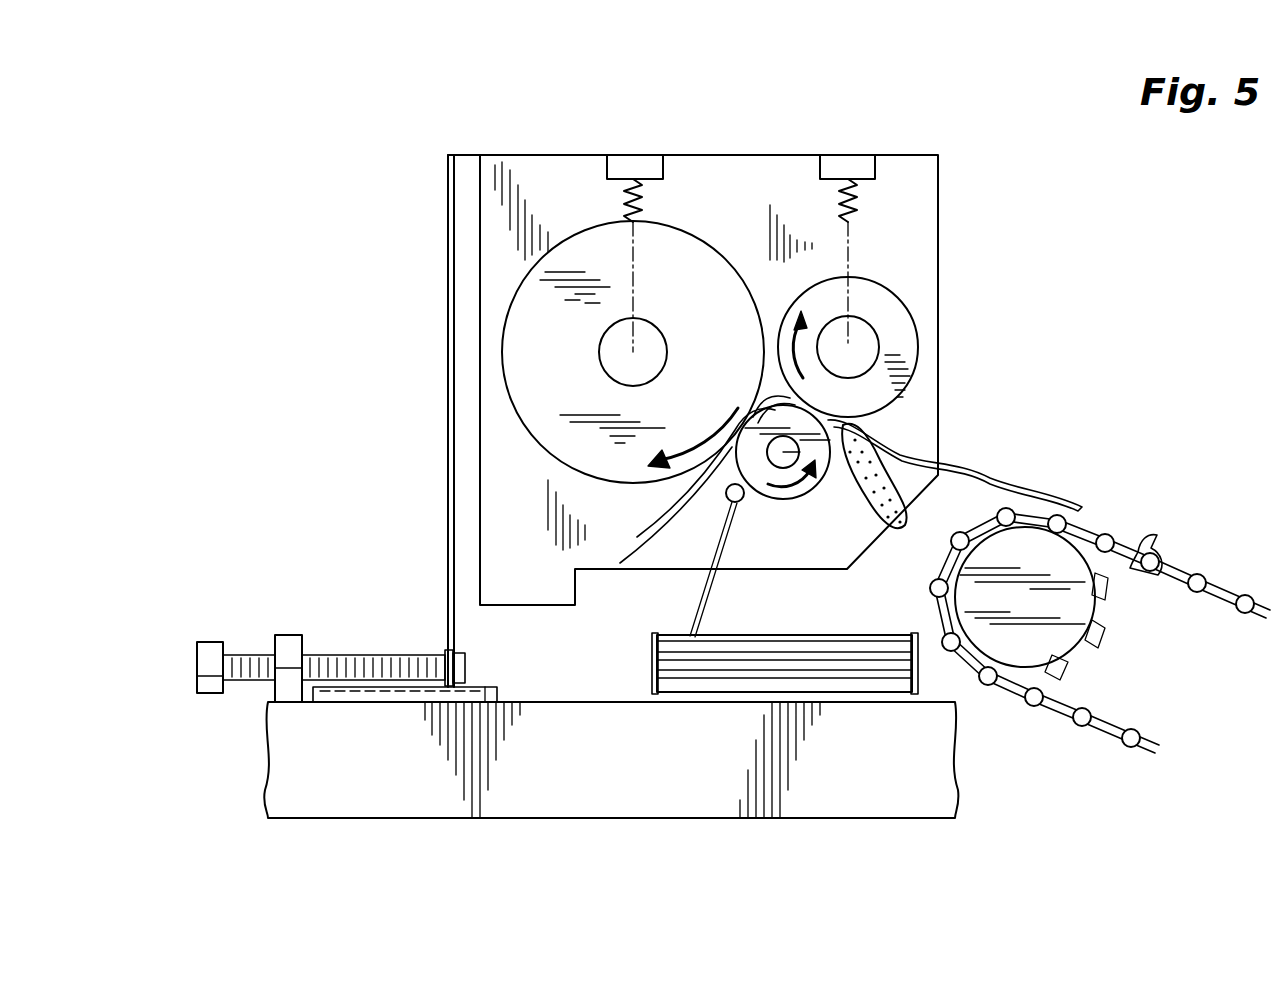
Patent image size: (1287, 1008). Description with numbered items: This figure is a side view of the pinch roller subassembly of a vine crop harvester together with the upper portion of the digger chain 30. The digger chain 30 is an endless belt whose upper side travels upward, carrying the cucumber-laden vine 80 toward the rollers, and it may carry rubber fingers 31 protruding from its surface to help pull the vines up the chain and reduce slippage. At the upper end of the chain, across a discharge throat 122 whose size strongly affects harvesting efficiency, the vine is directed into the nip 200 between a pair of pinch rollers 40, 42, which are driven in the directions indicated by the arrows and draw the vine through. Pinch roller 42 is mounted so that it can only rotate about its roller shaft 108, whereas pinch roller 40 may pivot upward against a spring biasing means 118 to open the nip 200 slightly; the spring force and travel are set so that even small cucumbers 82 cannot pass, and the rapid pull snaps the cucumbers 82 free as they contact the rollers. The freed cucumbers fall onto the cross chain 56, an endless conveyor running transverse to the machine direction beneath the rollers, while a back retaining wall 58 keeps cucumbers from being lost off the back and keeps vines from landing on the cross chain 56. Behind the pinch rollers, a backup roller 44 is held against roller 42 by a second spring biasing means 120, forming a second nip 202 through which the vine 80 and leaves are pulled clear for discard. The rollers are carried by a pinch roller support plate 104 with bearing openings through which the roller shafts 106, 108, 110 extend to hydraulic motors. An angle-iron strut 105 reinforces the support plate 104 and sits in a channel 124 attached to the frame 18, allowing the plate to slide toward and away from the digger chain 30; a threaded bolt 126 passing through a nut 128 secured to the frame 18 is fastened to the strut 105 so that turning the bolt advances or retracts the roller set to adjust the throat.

The frame 18 is at (350, 808).
The digger chain 30 is at (1063, 712).
The rubber fingers 31 is at (1160, 553).
The pinch roller 40 is at (905, 325).
The pinch roller 42 is at (792, 490).
The backup roller 44 is at (525, 325).
The cross chain 56 is at (652, 680).
The back retaining wall 58 is at (705, 587).
The vine 80 is at (1050, 487).
The cucumbers 82 is at (873, 522).
The pinch roller support plate 104 is at (507, 155).
The angle-iron strut 105 is at (468, 155).
The roller shaft 106 is at (870, 326).
The roller shaft 108 is at (831, 447).
The roller shaft 110 is at (610, 365).
The spring biasing means 118 is at (835, 197).
The spring biasing means 120 is at (622, 197).
The discharge throat 122 is at (932, 540).
The channel 124 is at (497, 693).
The threaded bolt 126 is at (197, 660).
The nut 128 is at (282, 633).
The nip 200 is at (878, 420).
The nip 202 is at (632, 562).